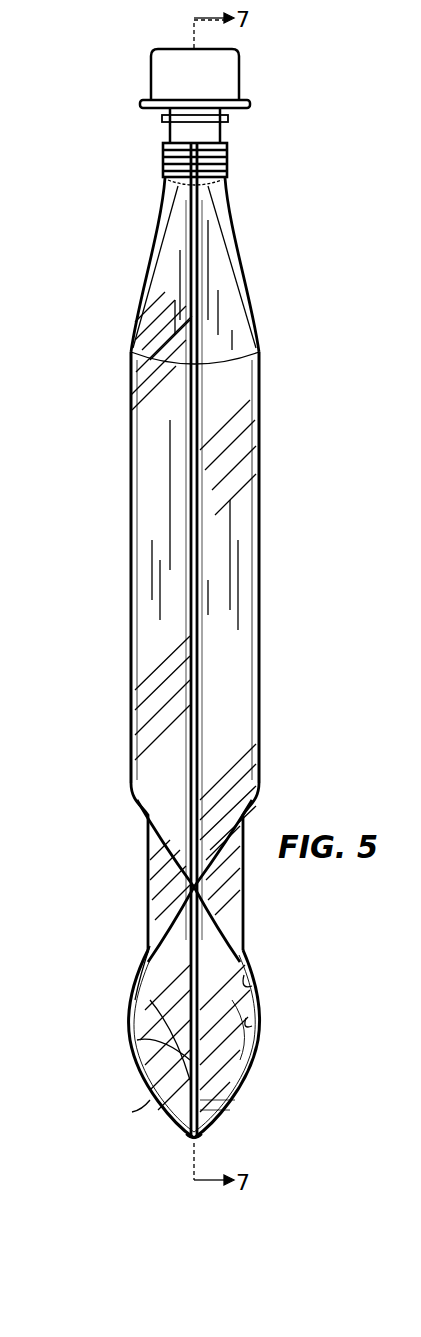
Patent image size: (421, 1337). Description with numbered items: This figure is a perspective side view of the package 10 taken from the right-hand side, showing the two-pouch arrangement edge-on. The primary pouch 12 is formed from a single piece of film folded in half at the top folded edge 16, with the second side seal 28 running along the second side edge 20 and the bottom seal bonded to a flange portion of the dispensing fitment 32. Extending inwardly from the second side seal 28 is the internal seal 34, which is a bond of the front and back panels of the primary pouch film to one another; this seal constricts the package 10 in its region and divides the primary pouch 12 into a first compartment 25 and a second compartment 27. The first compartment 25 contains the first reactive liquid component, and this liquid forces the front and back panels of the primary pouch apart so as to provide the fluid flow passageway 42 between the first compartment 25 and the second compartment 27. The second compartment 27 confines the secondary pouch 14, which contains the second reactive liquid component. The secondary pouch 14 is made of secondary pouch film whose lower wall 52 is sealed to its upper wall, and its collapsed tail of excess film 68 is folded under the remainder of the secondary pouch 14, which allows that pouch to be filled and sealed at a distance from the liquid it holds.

The package 10 is at (74, 153).
The dispensing fitment 32 is at (213, 127).
The first compartment 25 is at (145, 433).
The primary pouch 12 is at (128, 527).
The second side edge 20 is at (194, 517).
The second side seal 28 is at (196, 638).
The internal seal 34 is at (172, 880).
The liquid flow passageway 42 is at (216, 886).
The second compartment 27 is at (150, 948).
The secondary pouch 14 is at (136, 998).
The excess film 68 is at (250, 985).
The lower wall 52 is at (252, 1025).
The top folded edge 16 is at (198, 1140).